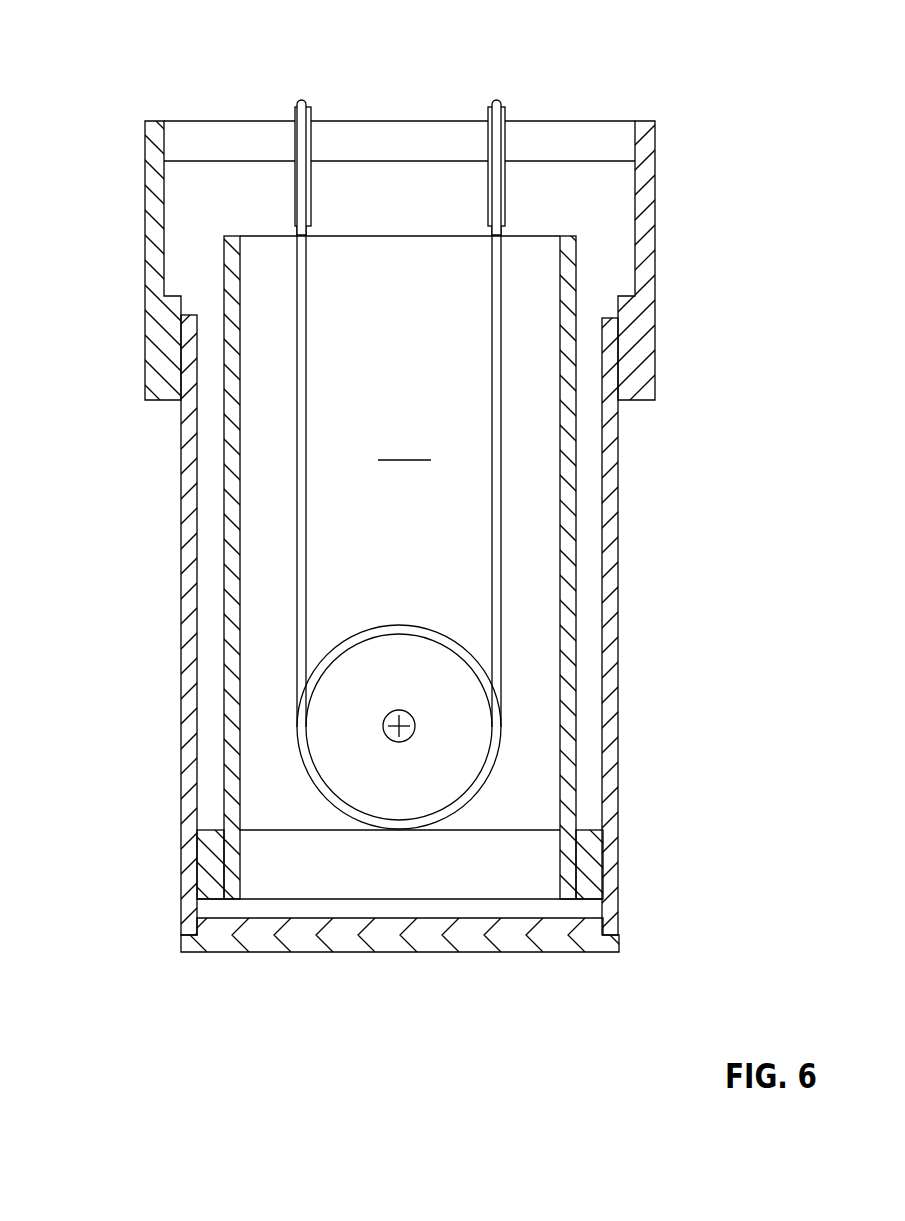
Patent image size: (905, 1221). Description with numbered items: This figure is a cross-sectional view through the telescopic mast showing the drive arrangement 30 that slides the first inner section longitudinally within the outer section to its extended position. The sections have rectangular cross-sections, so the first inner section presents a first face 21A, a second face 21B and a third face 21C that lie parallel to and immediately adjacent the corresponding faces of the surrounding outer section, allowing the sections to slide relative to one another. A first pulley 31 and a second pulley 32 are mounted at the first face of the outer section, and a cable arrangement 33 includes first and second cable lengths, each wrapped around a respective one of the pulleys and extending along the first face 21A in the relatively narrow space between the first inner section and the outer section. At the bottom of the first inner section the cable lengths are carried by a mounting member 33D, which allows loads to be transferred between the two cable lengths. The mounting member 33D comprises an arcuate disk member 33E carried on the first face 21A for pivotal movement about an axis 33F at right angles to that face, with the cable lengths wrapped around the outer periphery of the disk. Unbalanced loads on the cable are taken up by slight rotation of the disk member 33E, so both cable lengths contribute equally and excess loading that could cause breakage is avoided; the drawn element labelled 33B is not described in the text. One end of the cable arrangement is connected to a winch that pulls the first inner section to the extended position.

The first face 21A is at (525, 601).
The second face 21B is at (578, 517).
The third face 21C is at (223, 608).
The drive arrangement 30 is at (405, 263).
The first pulley 31 is at (293, 113).
The second pulley 32 is at (507, 113).
The cable arrangement 33 is at (297, 485).
The base plate 33B is at (440, 821).
The mounting member 33D is at (457, 782).
The arcuate disk member 33E is at (477, 658).
The axis 33F is at (415, 725).